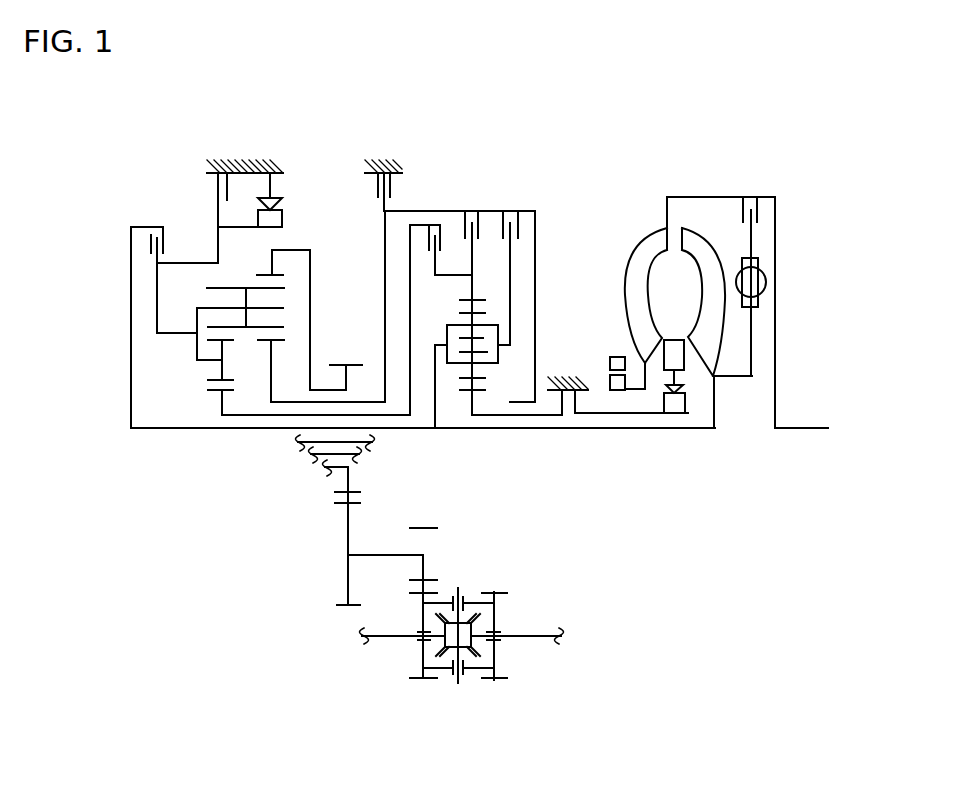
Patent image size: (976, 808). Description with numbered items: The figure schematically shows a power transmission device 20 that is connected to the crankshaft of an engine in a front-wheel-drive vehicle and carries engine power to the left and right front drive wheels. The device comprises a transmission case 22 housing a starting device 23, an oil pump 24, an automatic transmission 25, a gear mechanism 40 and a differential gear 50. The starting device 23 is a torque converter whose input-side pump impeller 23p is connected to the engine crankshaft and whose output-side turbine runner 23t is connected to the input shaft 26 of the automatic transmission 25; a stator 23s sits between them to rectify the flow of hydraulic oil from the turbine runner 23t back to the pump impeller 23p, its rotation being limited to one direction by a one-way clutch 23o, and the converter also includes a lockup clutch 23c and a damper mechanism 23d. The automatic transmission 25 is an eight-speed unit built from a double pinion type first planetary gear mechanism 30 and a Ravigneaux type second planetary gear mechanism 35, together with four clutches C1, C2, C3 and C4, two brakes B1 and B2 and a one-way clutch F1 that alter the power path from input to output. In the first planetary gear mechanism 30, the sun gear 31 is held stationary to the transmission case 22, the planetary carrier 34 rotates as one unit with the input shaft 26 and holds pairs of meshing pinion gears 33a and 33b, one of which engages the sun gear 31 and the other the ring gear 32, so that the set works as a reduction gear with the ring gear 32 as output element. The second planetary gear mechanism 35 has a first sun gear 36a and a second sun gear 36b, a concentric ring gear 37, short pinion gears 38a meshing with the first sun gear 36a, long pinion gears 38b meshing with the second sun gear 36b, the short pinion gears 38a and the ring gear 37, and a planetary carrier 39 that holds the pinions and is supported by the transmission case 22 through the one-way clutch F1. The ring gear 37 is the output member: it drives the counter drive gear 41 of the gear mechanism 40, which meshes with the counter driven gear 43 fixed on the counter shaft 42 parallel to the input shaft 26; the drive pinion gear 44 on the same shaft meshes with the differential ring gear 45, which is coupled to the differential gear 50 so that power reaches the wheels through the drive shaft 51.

The power transmission device 20 is at (517, 115).
The transmission case 22 is at (235, 162).
The starting device 23 is at (648, 217).
The pump impeller 23p is at (640, 262).
The turbine runner 23t is at (705, 253).
The stator 23s is at (675, 343).
The one-way clutch 23o is at (699, 408).
The lockup clutch 23c is at (771, 216).
The damper mechanism 23d is at (772, 302).
The oil pump 24 is at (596, 383).
The automatic transmission 25 is at (344, 182).
The input shaft 26 is at (687, 428).
The first planetary gear mechanism 30 is at (442, 314).
The sun gear 31 is at (465, 393).
The ring gear 32 is at (482, 300).
The pinion gear 33a is at (485, 352).
The pinion gear 33b is at (483, 313).
The planetary carrier 34 is at (447, 340).
The second planetary gear mechanism 35 is at (183, 391).
The first sun gear 36a is at (210, 392).
The second sun gear 36b is at (270, 343).
The ring gear 37 is at (283, 275).
The short pinion gear 38a is at (220, 368).
The long pinion gear 38b is at (212, 287).
The planetary carrier 39 is at (197, 318).
The gear mechanism 40 is at (327, 524).
The counter drive gear 41 is at (338, 492).
The counter shaft 42 is at (378, 553).
The counter driven gear 43 is at (345, 575).
The drive pinion gear 44 is at (435, 528).
The differential ring gear 45 is at (418, 680).
The differential gear 50 is at (520, 607).
The drive shaft 51 is at (396, 638).
The brake B1 is at (392, 190).
The brake B2 is at (212, 192).
The clutch C1 is at (443, 237).
The clutch C2 is at (152, 238).
The clutch C3 is at (480, 227).
The clutch C4 is at (518, 227).
The one-way clutch F1 is at (283, 217).